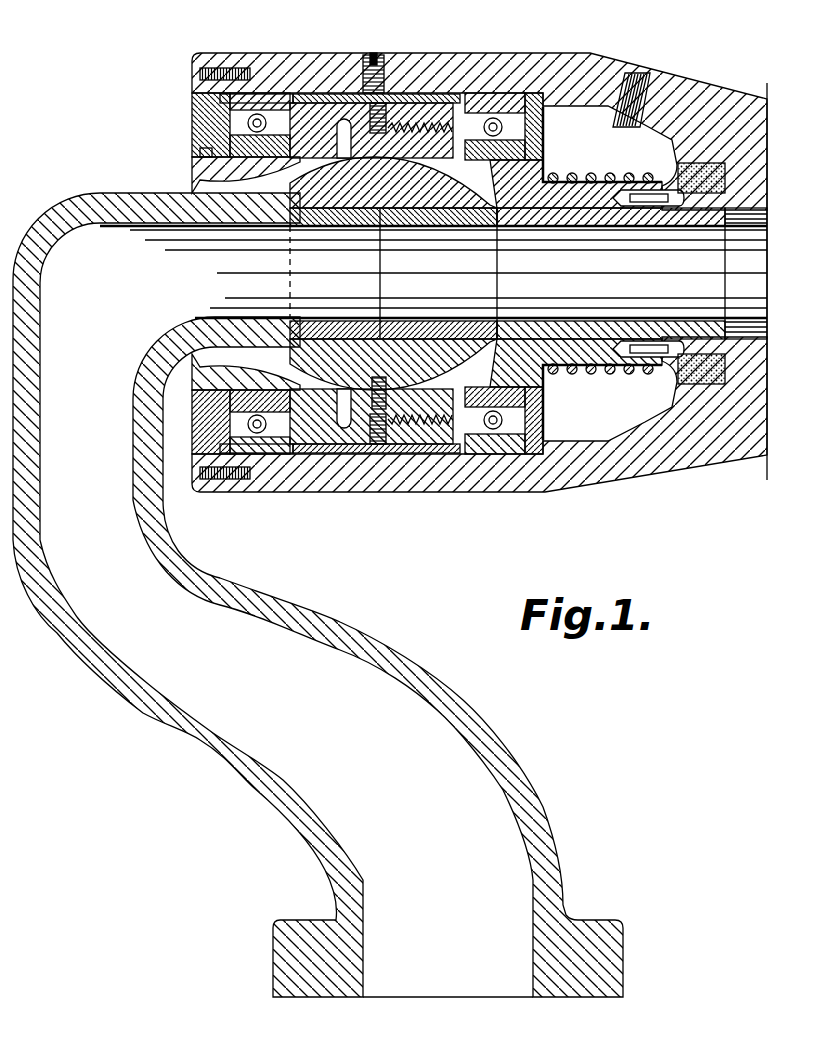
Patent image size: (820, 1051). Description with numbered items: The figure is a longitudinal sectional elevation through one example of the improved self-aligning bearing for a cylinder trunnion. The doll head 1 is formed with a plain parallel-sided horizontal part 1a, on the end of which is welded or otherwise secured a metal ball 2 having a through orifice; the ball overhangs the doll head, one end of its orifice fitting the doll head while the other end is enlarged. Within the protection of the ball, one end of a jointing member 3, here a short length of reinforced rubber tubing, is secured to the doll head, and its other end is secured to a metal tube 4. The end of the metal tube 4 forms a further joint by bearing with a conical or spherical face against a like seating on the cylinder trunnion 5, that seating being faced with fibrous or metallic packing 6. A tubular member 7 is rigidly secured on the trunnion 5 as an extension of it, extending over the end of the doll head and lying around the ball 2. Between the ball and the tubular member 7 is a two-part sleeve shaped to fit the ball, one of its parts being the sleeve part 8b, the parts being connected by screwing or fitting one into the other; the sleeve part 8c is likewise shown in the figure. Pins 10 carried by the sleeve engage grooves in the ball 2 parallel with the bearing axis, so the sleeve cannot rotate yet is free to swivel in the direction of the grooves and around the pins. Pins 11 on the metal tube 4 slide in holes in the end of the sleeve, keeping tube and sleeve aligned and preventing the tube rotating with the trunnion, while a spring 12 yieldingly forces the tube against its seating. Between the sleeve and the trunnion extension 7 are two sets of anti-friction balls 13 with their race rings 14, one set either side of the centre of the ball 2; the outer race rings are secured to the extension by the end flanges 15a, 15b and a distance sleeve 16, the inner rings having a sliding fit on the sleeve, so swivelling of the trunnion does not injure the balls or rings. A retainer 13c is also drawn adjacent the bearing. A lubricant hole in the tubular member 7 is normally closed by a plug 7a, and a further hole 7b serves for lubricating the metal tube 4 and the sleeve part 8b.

The doll head 1 is at (318, 595).
The parallel-sided horizontal part 1a is at (448, 269).
The metal ball 2 is at (393, 273).
The jointing member 3 is at (440, 215).
The metal tube 4 is at (588, 218).
The cylinder trunnion 5 is at (748, 230).
The packing 6 is at (690, 212).
The tubular member 7 is at (722, 84).
The plug 7a is at (373, 54).
The further hole 7b is at (636, 72).
The sleeve part 8b is at (574, 273).
The collar 8c is at (371, 273).
The pins 10 is at (392, 404).
The pins 11 is at (645, 210).
The spring 12 is at (609, 177).
The anti-friction balls 13 is at (247, 123).
The bearing retainer 13c is at (196, 160).
The race rings 14 is at (272, 92).
The end flange 15a is at (216, 518).
The end flange 15b is at (547, 133).
The distance sleeve 16 is at (420, 97).